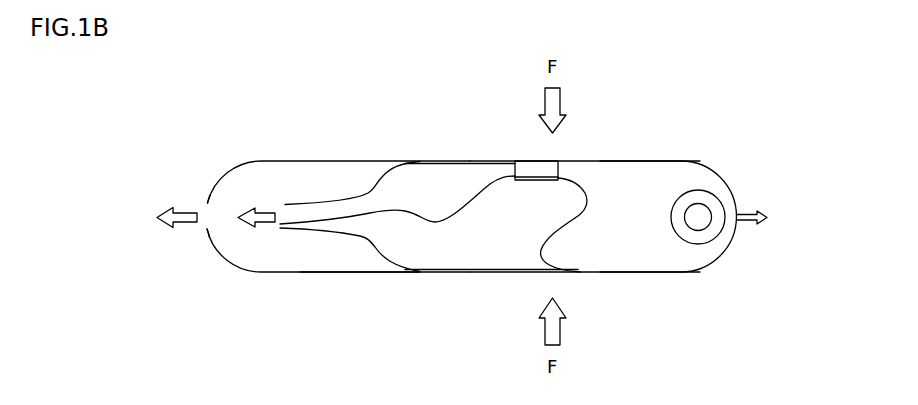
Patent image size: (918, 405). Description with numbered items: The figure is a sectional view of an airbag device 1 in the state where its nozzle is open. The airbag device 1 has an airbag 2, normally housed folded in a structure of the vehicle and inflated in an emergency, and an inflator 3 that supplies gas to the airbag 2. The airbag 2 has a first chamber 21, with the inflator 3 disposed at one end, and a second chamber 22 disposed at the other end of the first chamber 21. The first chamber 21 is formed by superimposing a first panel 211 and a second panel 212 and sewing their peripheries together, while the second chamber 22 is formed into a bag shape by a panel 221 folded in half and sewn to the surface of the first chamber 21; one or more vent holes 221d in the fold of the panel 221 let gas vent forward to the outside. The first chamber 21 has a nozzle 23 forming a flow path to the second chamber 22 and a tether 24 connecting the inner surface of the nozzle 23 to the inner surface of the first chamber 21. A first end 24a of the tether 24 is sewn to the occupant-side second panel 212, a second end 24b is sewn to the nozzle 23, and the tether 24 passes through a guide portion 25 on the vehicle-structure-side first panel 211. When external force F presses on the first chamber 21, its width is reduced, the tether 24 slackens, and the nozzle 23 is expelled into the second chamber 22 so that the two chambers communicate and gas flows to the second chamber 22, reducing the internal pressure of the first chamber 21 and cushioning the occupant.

The airbag device 1 is at (718, 133).
The airbag 2 is at (381, 138).
The inflator 3 is at (672, 205).
The first chamber 21 is at (613, 172).
The second chamber 22 is at (278, 172).
The nozzle 23 is at (316, 203).
The tether 24 is at (590, 205).
The first end of the tether 24a is at (304, 229).
The second end of the tether 24b is at (577, 266).
The guide portion 25 is at (532, 183).
The first panel 211 is at (652, 161).
The second panel 212 is at (629, 275).
The panel 221 is at (347, 275).
The vent hole 221d is at (200, 205).